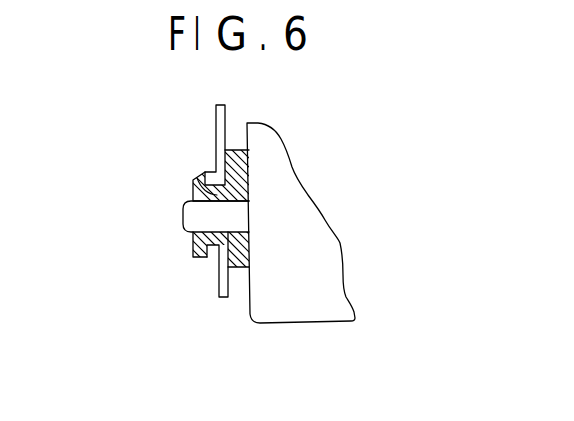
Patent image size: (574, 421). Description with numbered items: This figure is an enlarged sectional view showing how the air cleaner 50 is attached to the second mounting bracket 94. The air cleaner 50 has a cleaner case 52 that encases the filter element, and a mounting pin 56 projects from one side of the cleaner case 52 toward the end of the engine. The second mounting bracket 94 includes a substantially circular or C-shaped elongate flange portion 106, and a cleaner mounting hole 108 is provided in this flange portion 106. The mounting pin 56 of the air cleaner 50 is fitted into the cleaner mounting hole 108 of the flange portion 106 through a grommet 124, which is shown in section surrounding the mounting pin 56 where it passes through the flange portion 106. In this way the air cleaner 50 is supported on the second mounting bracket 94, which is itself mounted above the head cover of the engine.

The air cleaner 50 is at (243, 313).
The cleaner case 52 is at (307, 228).
The mounting pin 56 is at (190, 211).
The second mounting bracket 94 is at (246, 112).
The flange portion 106 is at (225, 130).
The cleaner mounting hole 108 is at (190, 181).
The grommet 124 is at (201, 245).